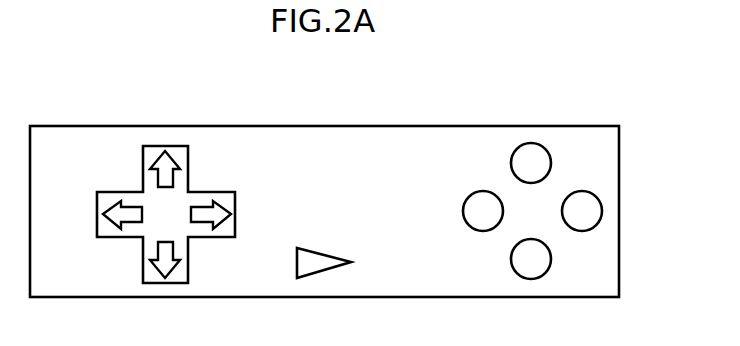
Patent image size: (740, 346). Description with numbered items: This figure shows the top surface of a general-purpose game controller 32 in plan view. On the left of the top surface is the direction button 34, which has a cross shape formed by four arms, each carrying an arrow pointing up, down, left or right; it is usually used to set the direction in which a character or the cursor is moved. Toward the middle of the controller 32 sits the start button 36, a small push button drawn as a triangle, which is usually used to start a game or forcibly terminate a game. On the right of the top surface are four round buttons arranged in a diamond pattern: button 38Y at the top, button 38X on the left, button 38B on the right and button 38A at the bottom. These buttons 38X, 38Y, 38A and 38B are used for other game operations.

The controller 32 is at (82, 126).
The direction button 34 is at (188, 168).
The start button 36 is at (326, 250).
The button 38Y is at (510, 164).
The button 38X is at (462, 212).
The button 38B is at (603, 212).
The button 38A is at (510, 260).